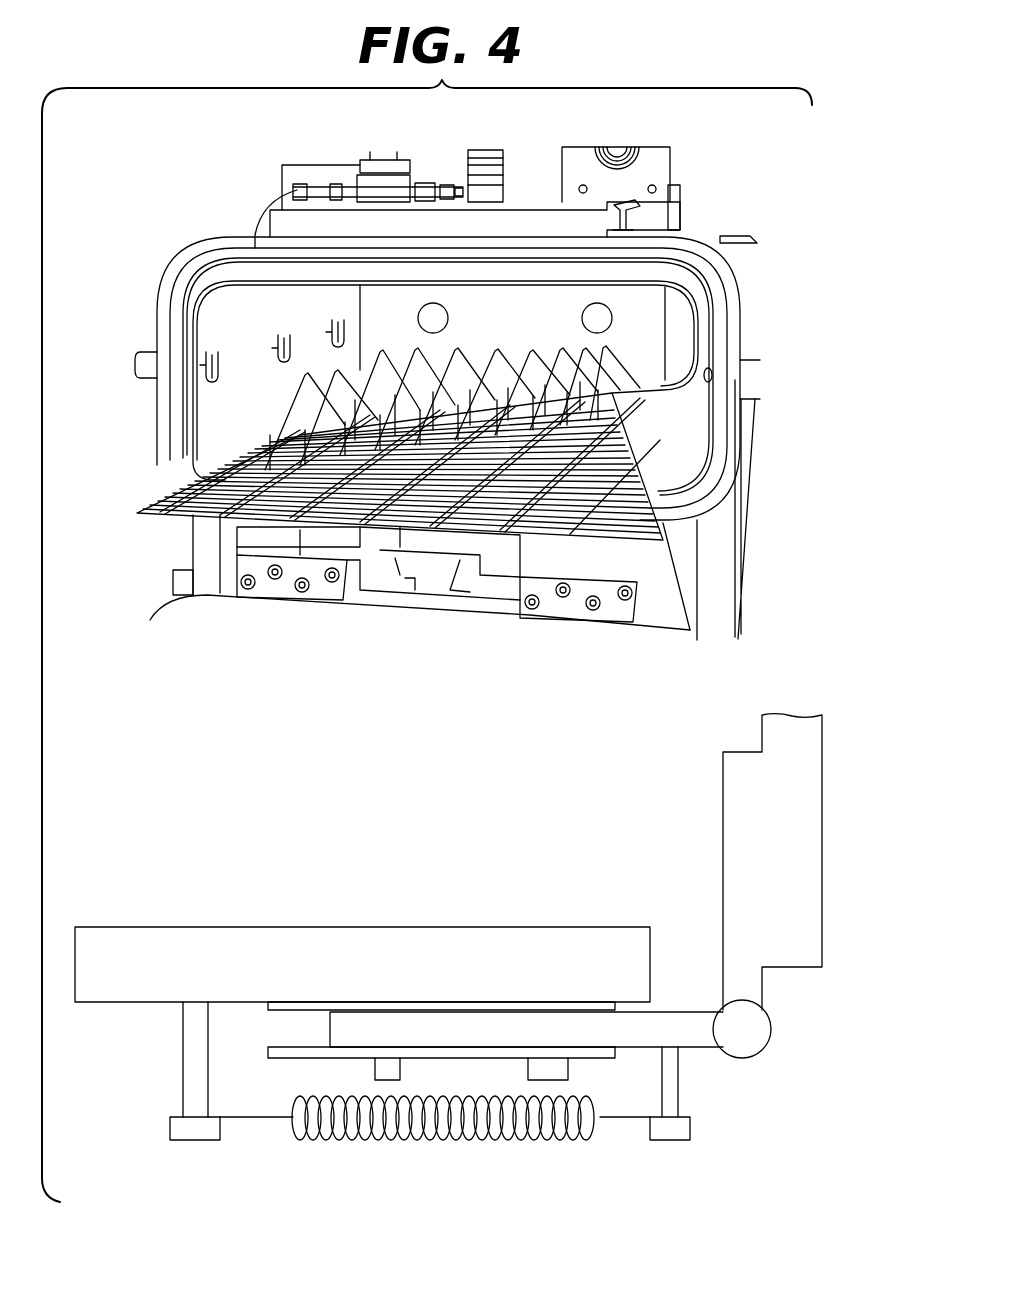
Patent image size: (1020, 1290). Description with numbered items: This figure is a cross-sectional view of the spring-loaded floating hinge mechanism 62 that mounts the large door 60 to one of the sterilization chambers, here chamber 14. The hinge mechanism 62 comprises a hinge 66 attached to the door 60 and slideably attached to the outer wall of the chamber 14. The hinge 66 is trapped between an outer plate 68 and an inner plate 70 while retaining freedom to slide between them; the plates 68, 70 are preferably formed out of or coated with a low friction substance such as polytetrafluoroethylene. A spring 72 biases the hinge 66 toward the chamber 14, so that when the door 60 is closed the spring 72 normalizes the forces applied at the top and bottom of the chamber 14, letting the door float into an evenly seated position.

The chamber 14 is at (108, 990).
The door 60 is at (810, 945).
The floating hinge mechanism 62 is at (728, 1098).
The hinge 66 is at (772, 1036).
The outer plate 68 is at (278, 1060).
The inner plate 70 is at (283, 1012).
The spring 72 is at (338, 1143).